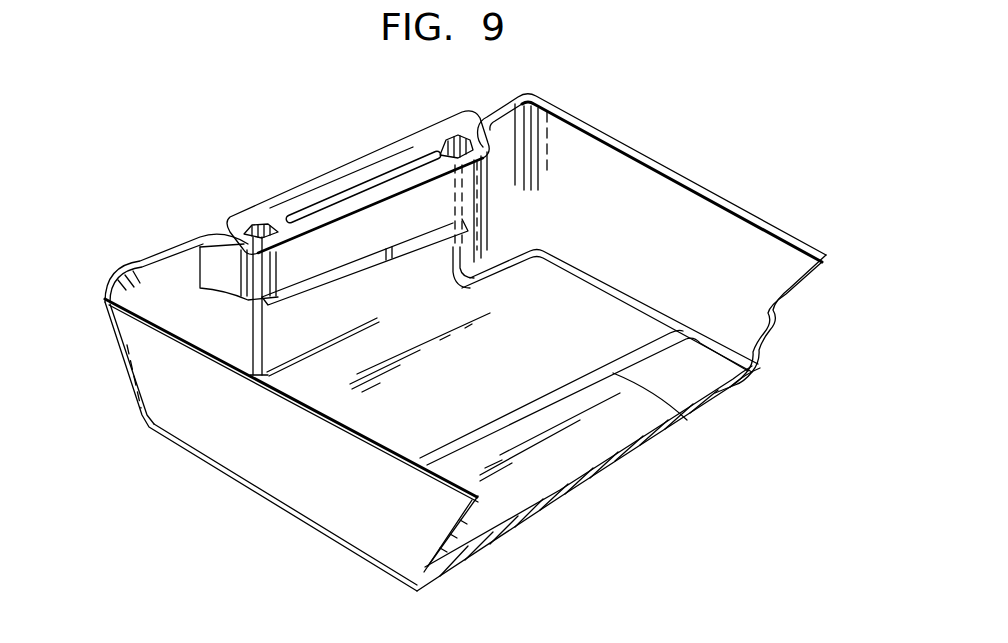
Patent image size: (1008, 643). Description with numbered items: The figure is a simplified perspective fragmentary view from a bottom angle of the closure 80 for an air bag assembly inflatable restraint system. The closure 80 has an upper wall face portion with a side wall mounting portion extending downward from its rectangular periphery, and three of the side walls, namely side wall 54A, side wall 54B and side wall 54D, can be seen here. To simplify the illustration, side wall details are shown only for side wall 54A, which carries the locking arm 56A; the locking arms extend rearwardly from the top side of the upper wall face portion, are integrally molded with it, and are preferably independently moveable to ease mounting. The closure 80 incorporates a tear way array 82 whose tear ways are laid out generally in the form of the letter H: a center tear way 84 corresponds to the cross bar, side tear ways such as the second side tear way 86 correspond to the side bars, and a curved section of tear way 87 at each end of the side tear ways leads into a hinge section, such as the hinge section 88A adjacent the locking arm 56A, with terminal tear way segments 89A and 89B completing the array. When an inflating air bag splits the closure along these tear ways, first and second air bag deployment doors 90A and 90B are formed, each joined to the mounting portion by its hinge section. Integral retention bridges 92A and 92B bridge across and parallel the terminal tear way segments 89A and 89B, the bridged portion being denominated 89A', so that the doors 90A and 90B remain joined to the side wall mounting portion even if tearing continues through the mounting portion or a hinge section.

The closure 80 is at (122, 180).
The side wall 54A is at (140, 285).
The side wall 54B is at (570, 130).
The side wall 54D is at (280, 477).
The locking arm 56A is at (337, 188).
The retention bridge 92A is at (255, 228).
The retention bridge 92B is at (472, 146).
The hinge section 88A is at (297, 357).
The terminal tear way segment 89A is at (209, 372).
The bridged portion of terminal tear way segment 89A' is at (235, 290).
The terminal tear way segment 89B is at (448, 175).
The curved section of tear way 87 is at (455, 286).
The second side tear way 86 is at (614, 287).
The tear way array 82 is at (697, 330).
The center tear way 84 is at (687, 417).
The first air bag deployment door 90A is at (487, 384).
The second air bag deployment door 90B is at (605, 463).